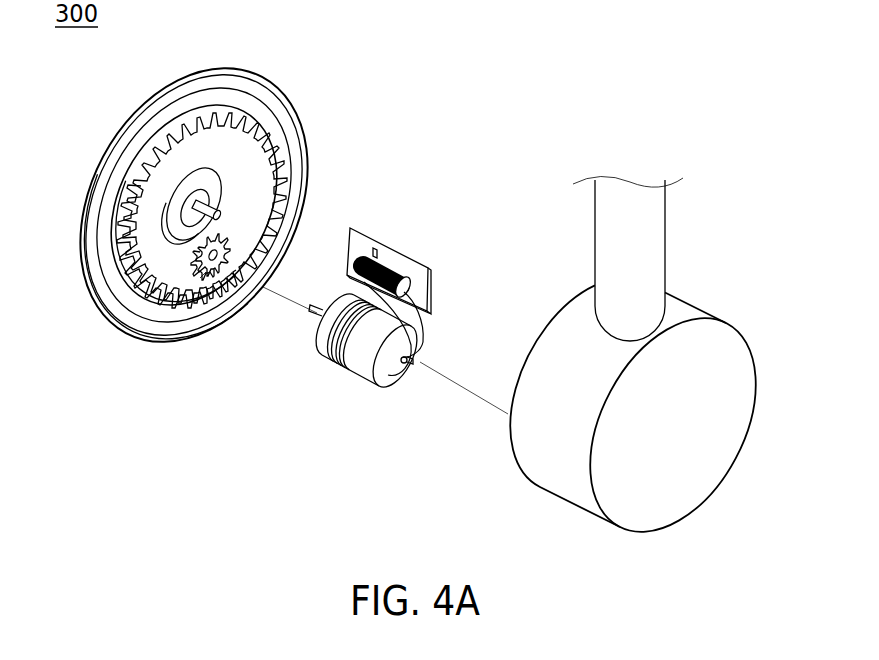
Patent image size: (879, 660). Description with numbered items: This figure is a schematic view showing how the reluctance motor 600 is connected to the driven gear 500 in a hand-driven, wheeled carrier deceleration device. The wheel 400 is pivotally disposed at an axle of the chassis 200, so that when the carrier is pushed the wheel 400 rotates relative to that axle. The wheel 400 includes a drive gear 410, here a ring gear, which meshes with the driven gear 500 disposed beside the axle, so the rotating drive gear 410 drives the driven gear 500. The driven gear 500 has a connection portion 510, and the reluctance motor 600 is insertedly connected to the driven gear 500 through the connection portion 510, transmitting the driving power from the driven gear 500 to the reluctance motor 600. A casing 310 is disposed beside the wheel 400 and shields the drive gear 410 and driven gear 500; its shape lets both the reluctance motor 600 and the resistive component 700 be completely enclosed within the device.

The wheel 400 is at (305, 68).
The drive gear 410 is at (280, 177).
The driven gear 500 is at (190, 290).
The connection portion 510 is at (217, 262).
The reluctance motor 600 is at (348, 395).
The resistive component 700 is at (412, 228).
The chassis 200 is at (703, 207).
The casing 310 is at (575, 488).